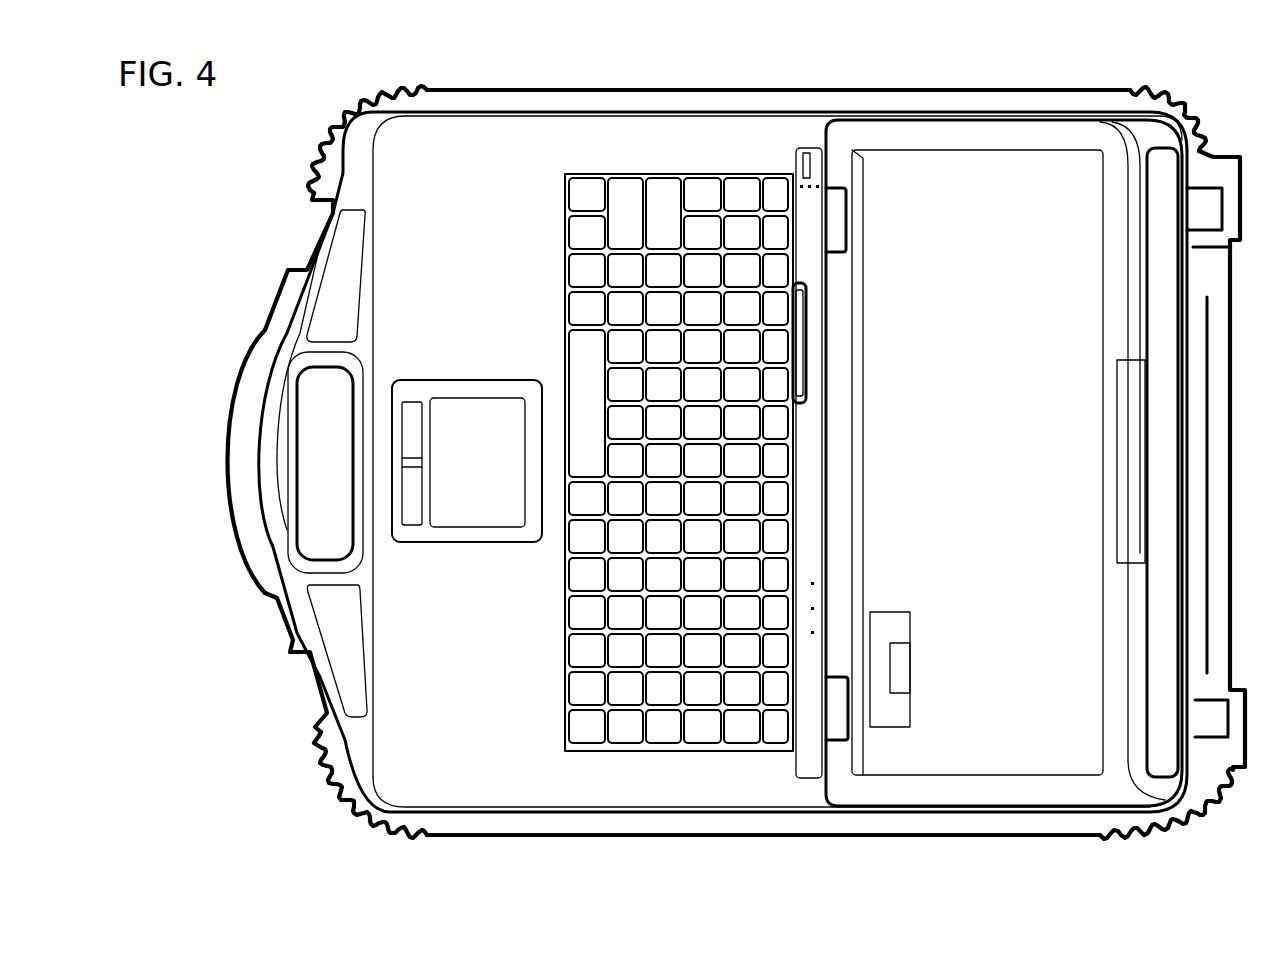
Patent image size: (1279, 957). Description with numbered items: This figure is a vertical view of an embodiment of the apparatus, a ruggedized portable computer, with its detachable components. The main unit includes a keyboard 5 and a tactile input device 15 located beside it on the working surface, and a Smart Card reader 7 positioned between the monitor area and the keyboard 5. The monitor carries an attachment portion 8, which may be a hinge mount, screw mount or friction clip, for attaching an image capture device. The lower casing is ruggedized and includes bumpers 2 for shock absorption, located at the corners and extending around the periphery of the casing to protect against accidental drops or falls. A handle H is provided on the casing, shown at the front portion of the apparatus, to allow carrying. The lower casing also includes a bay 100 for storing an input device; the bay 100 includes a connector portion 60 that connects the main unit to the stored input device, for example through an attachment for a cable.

The bumpers 2 is at (333, 122).
The keyboard 5 is at (571, 715).
The Smart Card reader 7 is at (802, 300).
The attachment portion 8 is at (1158, 578).
The tactile input device 15 is at (450, 518).
The connector portion 60 is at (893, 620).
The bay 100 is at (930, 762).
The handle H is at (280, 503).